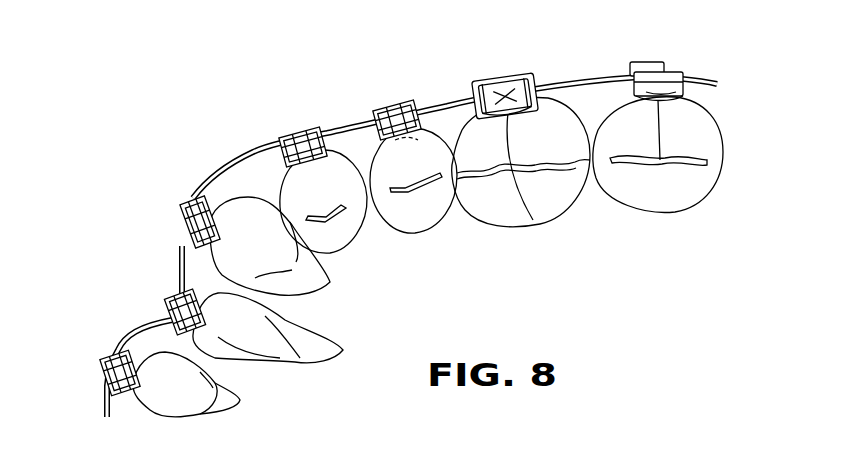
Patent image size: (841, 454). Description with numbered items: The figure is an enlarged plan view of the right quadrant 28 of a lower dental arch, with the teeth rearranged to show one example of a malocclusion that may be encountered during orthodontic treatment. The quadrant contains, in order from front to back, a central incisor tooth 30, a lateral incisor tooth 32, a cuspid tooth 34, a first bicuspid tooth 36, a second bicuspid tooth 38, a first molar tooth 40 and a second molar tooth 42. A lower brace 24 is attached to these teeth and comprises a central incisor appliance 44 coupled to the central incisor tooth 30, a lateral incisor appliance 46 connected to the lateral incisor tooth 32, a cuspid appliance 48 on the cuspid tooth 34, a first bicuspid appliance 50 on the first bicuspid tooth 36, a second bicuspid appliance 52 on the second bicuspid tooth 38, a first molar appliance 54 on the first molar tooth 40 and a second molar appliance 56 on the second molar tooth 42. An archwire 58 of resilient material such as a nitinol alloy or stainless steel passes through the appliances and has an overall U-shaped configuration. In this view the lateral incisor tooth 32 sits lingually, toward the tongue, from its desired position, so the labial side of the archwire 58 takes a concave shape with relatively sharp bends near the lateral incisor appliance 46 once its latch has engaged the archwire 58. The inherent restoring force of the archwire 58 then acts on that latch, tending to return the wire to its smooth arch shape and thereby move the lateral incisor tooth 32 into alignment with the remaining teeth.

The lower brace 24 is at (190, 137).
The right quadrant 28 is at (550, 307).
The central incisor tooth 30 is at (226, 396).
The lateral incisor tooth 32 is at (315, 357).
The cuspid tooth 34 is at (313, 287).
The first bicuspid tooth 36 is at (350, 248).
The second bicuspid tooth 38 is at (428, 228).
The first molar tooth 40 is at (553, 208).
The second molar tooth 42 is at (673, 210).
The central incisor appliance 44 is at (108, 380).
The lateral incisor appliance 46 is at (174, 315).
The cuspid appliance 48 is at (186, 222).
The first bicuspid appliance 50 is at (290, 138).
The second bicuspid appliance 52 is at (406, 105).
The first molar appliance 54 is at (520, 88).
The second molar appliance 56 is at (667, 72).
The archwire 58 is at (346, 117).